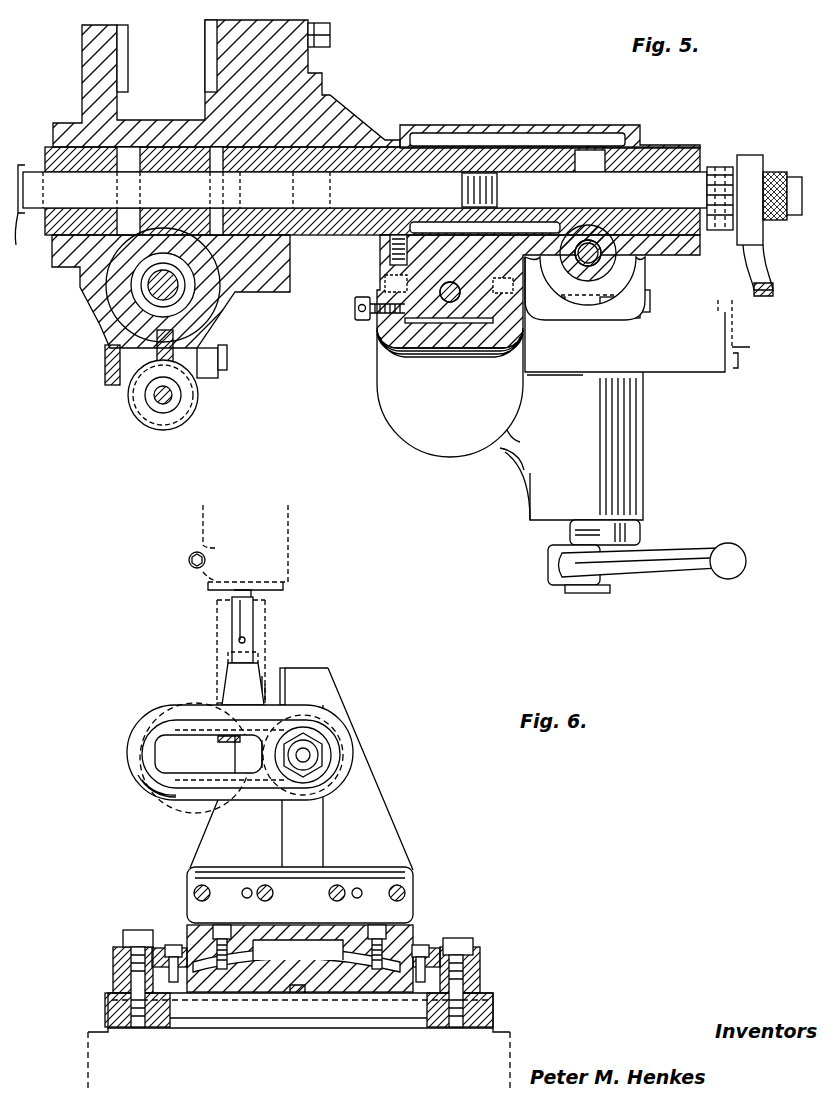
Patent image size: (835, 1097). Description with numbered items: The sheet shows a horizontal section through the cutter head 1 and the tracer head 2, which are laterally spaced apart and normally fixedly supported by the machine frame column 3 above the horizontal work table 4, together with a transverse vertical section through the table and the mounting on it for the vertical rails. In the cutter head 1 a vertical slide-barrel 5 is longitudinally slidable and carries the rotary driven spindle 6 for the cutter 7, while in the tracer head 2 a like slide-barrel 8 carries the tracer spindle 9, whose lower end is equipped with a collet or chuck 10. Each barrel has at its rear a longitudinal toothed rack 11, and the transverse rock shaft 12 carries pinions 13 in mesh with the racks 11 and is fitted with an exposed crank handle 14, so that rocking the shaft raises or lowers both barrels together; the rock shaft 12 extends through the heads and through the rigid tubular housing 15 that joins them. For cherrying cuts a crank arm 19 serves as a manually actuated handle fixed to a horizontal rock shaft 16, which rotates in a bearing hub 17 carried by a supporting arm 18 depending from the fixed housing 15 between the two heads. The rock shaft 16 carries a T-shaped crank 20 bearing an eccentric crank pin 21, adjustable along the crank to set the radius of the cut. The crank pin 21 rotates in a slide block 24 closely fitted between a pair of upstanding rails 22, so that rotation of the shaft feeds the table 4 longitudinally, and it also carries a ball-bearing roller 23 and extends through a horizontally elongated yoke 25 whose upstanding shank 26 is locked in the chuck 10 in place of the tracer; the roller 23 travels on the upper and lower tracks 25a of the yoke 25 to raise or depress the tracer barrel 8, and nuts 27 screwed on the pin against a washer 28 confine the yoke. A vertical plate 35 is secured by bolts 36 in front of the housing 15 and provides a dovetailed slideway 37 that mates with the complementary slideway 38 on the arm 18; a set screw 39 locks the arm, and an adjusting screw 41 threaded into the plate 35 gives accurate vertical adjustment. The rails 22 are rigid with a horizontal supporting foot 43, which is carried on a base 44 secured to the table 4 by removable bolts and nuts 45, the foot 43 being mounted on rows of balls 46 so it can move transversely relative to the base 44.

In FIG. 5, the cutter head 1 is at (232, 318).
In FIG. 5, the tracer head 2 is at (645, 278).
In FIG. 6, the tracer head 2 is at (290, 540).
In FIG. 5, the machine frame column 3 is at (253, 65).
In FIG. 6, the work table 4 is at (336, 1012).
In FIG. 5, the cutter slide-barrel 5 is at (125, 322).
In FIG. 5, the cutter spindle 6 is at (150, 290).
In FIG. 6, the cutter 7 is at (258, 616).
In FIG. 5, the tracer slide-barrel 8 is at (575, 280).
In FIG. 6, the tracer slide-barrel 8 is at (217, 630).
In FIG. 5, the tracer spindle 9 is at (590, 272).
In FIG. 6, the collet or chuck 10 is at (222, 674).
In FIG. 5, the toothed rack 11 is at (108, 278).
In FIG. 5, the rock shaft 12 is at (262, 207).
In FIG. 5, the pinions 13 is at (170, 162).
In FIG. 5, the crank handle 14 is at (18, 230).
In FIG. 5, the tubular housing 15 is at (592, 130).
In FIG. 5, the rock shaft 16 is at (588, 592).
In FIG. 5, the bearing hub 17 is at (636, 457).
In FIG. 5, the supporting arm 18 is at (452, 340).
In FIG. 5, the crank arm 19 is at (680, 556).
In FIG. 5, the crank 20 is at (702, 372).
In FIG. 6, the crank pin 21 is at (310, 756).
In FIG. 6, the rails 22 is at (280, 854).
In FIG. 6, the roller 23 is at (275, 760).
In FIG. 6, the slide block 24 is at (340, 730).
In FIG. 6, the yoke 25 is at (158, 708).
In FIG. 6, the tracks 25a is at (221, 755).
In FIG. 6, the shank 26 is at (250, 650).
In FIG. 6, the nuts 27 is at (304, 736).
In FIG. 6, the washer 28 is at (325, 778).
In FIG. 5, the vertical plate 35 is at (486, 270).
In FIG. 5, the bolts 36 is at (428, 214).
In FIG. 5, the dovetailed slideway 37 is at (385, 357).
In FIG. 5, the dovetailed slideway 38 is at (410, 322).
In FIG. 5, the set screw 39 is at (355, 310).
In FIG. 5, the adjusting screw 41 is at (447, 303).
In FIG. 6, the supporting foot 43 is at (298, 920).
In FIG. 6, the base 44 is at (278, 992).
In FIG. 6, the bolts and nuts 45 is at (130, 936).
In FIG. 6, the balls 46 is at (178, 948).